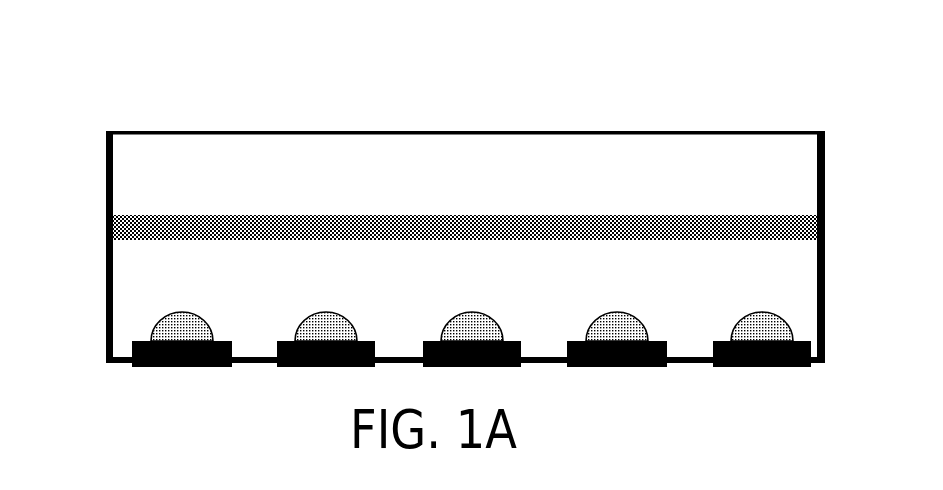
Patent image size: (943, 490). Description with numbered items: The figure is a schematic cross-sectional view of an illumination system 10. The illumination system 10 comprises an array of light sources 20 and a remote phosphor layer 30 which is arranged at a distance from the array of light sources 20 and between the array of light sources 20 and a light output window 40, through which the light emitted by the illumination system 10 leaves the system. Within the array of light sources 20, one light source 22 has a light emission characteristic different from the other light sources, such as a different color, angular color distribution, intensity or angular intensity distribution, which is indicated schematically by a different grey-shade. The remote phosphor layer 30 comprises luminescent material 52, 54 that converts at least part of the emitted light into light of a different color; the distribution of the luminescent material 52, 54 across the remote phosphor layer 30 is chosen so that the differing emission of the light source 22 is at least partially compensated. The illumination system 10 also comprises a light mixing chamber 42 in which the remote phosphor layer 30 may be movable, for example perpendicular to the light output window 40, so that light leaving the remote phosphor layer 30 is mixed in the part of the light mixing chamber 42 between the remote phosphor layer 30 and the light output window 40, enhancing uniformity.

The illumination system 10 is at (201, 104).
The array of light sources 20 is at (102, 310).
The light source 22 is at (300, 322).
The remote phosphor layer 30 is at (88, 234).
The light output window 40 is at (117, 122).
The light mixing chamber 42 is at (623, 150).
The luminescent material 52 is at (187, 214).
The luminescent material 54 is at (310, 222).